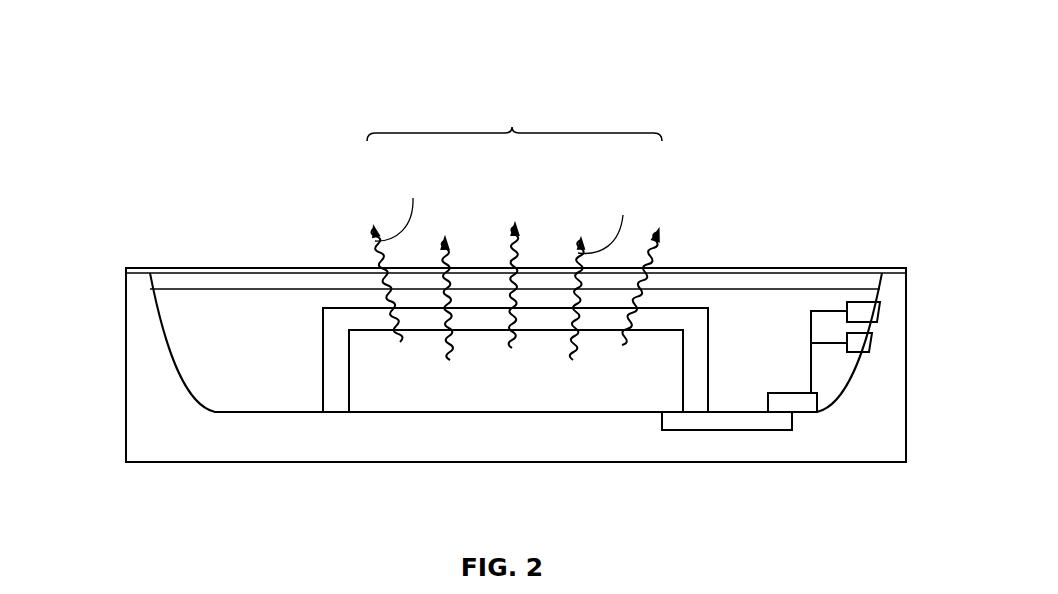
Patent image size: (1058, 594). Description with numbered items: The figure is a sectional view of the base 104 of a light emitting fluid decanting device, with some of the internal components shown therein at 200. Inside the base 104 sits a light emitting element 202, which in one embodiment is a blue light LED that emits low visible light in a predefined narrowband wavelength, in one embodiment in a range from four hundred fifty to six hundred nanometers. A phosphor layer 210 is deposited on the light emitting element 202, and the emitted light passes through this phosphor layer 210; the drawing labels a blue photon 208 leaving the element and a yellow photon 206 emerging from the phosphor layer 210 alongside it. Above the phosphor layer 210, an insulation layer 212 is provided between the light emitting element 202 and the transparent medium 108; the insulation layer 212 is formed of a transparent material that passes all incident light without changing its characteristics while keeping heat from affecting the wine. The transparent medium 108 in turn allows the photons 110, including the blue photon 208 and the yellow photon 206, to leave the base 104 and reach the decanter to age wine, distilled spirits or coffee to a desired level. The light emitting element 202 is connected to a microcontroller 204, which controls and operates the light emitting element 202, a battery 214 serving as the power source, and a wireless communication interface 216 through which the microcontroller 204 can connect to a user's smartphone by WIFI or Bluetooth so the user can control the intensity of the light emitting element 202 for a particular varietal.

The internal components 200 is at (153, 107).
The photons 110 is at (514, 117).
The base 104 is at (126, 317).
The transparent medium 108 is at (775, 267).
The insulation layer 212 is at (842, 283).
The phosphor layer 210 is at (687, 322).
The light emitting element 202 is at (622, 392).
The microcontroller 204 is at (802, 405).
The wireless communication interface 216 is at (863, 313).
The battery 214 is at (855, 342).
The blue photon 208 is at (367, 247).
The yellow photon 206 is at (578, 253).